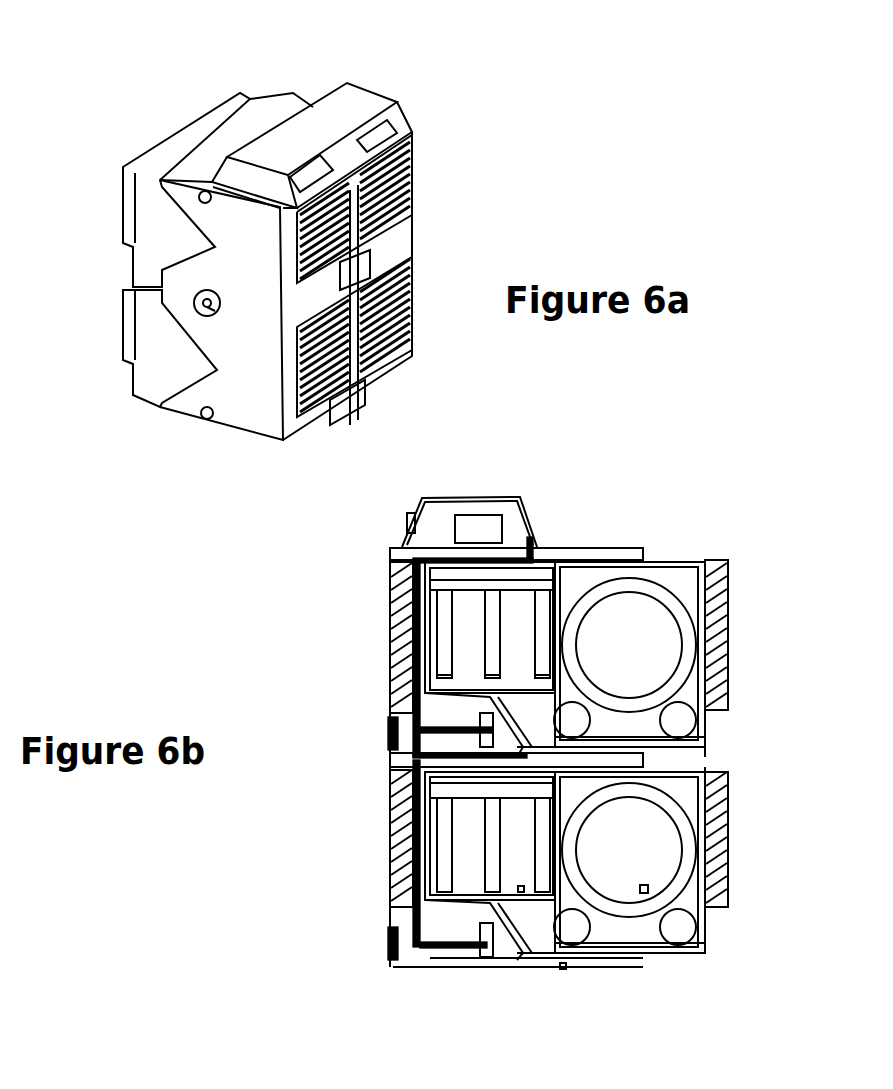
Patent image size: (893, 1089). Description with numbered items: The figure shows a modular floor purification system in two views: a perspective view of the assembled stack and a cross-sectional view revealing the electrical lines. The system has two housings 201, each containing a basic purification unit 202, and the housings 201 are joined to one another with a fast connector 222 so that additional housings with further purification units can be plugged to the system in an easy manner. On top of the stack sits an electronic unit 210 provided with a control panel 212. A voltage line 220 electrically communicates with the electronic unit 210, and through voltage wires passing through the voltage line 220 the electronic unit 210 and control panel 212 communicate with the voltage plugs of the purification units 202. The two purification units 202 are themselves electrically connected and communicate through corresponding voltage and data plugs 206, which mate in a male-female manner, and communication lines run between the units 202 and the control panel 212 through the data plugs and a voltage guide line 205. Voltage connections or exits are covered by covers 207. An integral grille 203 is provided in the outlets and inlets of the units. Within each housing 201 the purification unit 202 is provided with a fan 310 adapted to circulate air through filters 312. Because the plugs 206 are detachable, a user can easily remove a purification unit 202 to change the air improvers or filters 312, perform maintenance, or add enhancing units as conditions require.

In FIG. 6a, the housing 201 is at (262, 113).
In FIG. 6b, the housing 201 is at (592, 545).
In FIG. 6a, the basic purification unit 202 is at (143, 212).
In FIG. 6b, the basic purification unit 202 is at (707, 728).
In FIG. 6b, the integral grille 203 is at (388, 592).
In FIG. 6b, the voltage guide line 205 is at (398, 647).
In FIG. 6b, the voltage and data plug 206 is at (488, 742).
In FIG. 6a, the cover 207 is at (347, 397).
In FIG. 6b, the cover 207 is at (390, 740).
In FIG. 6a, the electronic unit 210 is at (357, 103).
In FIG. 6b, the electronic unit 210 is at (440, 510).
In FIG. 6a, the control panel 212 is at (385, 128).
In FIG. 6b, the voltage line 220 is at (450, 950).
In FIG. 6a, the fast connector 222 is at (195, 302).
In FIG. 6b, the fan 310 is at (647, 680).
In FIG. 6b, the filter 312 is at (490, 580).